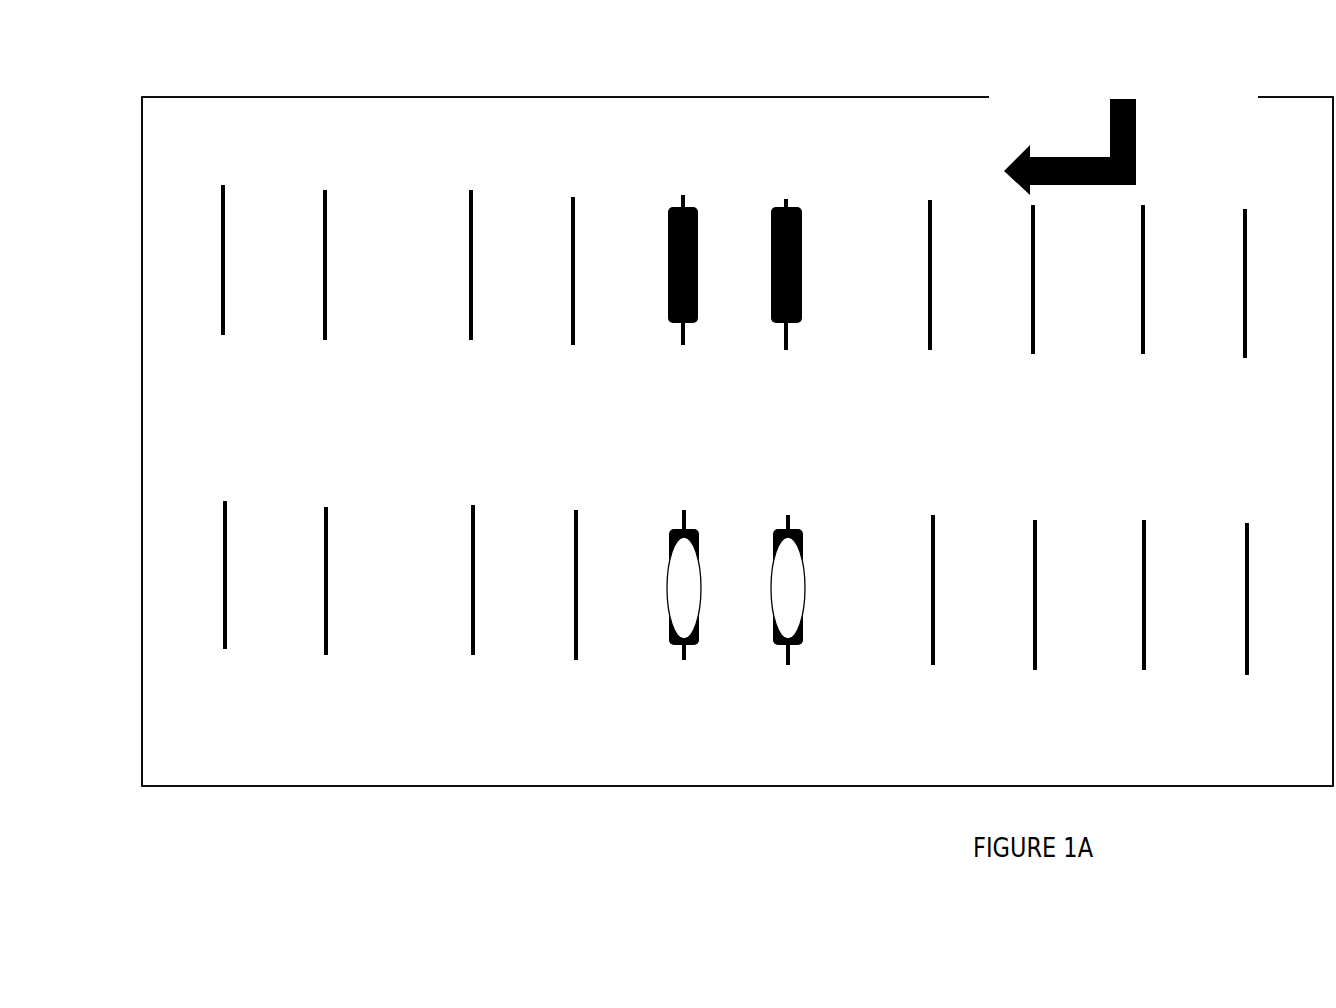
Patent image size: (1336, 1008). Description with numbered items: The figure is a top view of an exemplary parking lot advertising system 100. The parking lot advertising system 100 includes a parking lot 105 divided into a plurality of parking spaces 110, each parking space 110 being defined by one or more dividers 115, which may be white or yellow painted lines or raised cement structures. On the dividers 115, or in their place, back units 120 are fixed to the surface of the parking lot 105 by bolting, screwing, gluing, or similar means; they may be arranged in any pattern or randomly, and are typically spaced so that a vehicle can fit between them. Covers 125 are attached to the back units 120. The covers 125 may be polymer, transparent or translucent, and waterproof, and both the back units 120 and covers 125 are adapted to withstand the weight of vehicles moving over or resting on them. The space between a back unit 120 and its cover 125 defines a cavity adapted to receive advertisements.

The parking lot advertising system 100 is at (111, 810).
The parking lot 105 is at (245, 122).
The parking space 110 is at (270, 288).
The divider 115 is at (568, 175).
The back unit 120 is at (814, 236).
The cover 125 is at (794, 588).